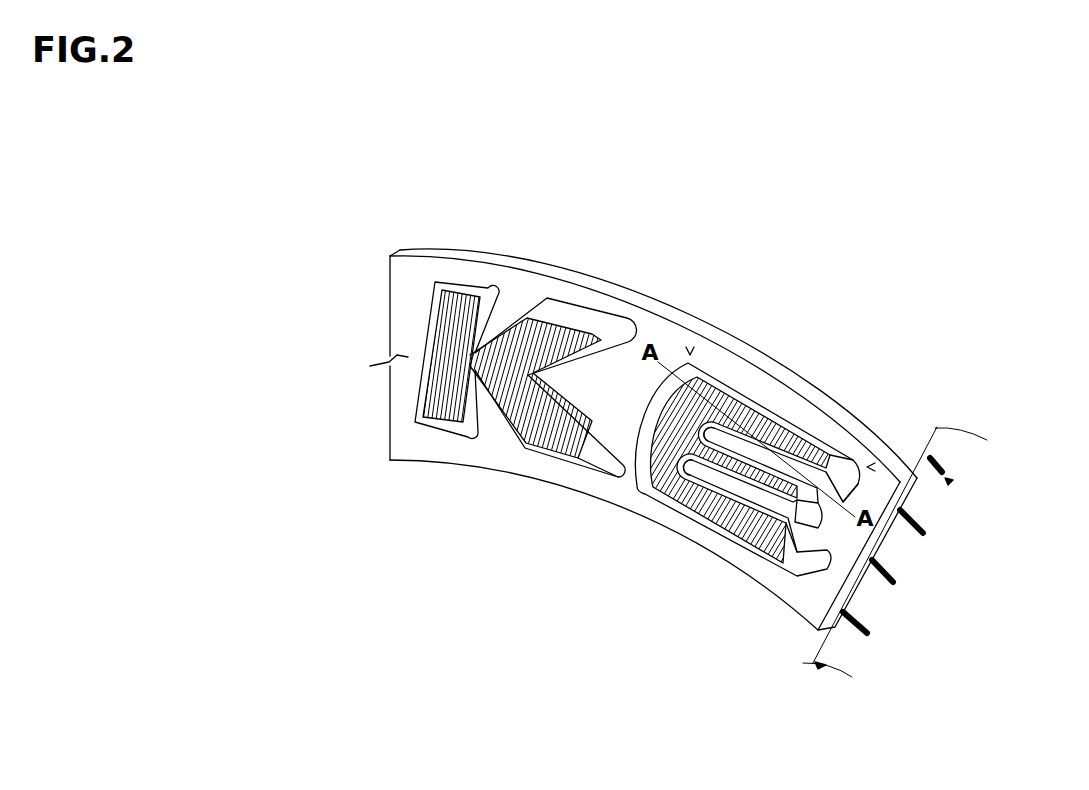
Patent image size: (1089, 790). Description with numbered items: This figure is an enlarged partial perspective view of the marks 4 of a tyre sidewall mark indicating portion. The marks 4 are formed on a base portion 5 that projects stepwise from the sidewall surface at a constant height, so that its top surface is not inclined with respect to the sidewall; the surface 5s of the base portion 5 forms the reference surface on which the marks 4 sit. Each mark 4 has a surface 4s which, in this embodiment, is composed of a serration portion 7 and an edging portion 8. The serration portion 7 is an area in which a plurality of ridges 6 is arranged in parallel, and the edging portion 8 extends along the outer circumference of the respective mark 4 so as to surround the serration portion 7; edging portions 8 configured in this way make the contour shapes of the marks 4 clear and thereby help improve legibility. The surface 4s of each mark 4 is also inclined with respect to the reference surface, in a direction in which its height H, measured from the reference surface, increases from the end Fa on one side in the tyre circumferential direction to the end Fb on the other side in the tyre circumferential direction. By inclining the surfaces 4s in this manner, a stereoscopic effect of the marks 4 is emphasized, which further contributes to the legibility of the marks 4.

The mark 4 is at (487, 443).
The surface of the mark 4s is at (755, 531).
The base portion 5 is at (678, 456).
The surface of the base portion 5s is at (768, 396).
The ridge 6 is at (765, 563).
The serration portion 7 is at (768, 495).
The edging portion 8 is at (700, 522).
The end on one side in the tyre circumferential direction Fa is at (690, 353).
The end on the other side in the tyre circumferential direction Fb is at (869, 467).
The height H is at (822, 456).